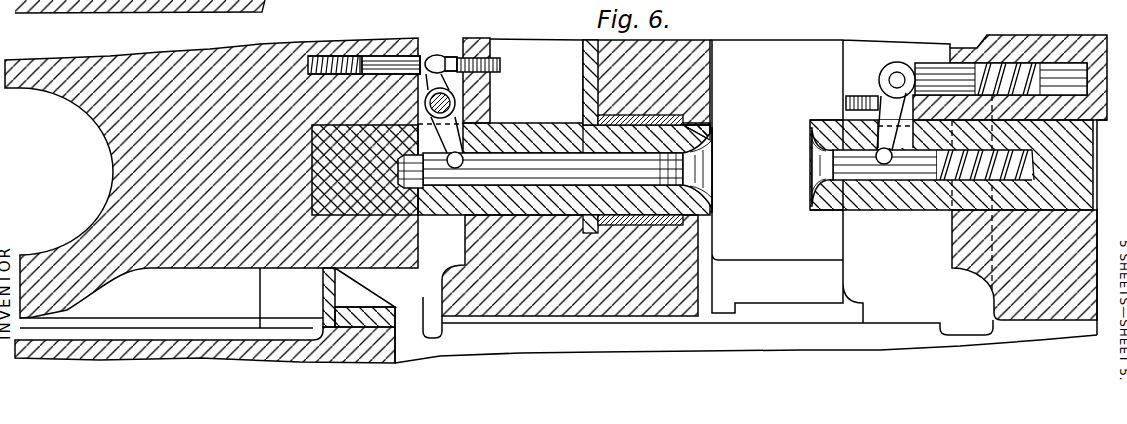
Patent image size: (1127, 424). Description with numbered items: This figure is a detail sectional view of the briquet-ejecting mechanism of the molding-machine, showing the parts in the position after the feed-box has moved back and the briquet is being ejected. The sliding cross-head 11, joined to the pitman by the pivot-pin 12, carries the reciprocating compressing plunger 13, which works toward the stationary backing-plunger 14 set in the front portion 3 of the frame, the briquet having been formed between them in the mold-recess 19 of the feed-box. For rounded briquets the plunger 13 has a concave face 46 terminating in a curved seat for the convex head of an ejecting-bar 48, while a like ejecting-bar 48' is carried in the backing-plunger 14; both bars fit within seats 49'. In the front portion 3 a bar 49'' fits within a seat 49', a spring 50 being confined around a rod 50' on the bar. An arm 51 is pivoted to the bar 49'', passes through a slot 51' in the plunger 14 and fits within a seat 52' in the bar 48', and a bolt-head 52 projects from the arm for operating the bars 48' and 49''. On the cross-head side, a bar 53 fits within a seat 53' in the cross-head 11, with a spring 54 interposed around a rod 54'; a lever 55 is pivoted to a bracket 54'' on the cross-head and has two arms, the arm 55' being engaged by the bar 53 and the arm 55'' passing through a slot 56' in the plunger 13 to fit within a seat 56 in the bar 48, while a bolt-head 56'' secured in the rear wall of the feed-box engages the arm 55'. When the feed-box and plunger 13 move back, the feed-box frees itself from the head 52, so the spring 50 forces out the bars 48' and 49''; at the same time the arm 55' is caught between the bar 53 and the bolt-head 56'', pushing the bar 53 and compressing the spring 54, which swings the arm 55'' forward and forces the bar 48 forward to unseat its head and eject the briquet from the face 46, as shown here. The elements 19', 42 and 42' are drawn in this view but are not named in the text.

The front portion 3 is at (1024, 265).
The cross-head 11 is at (211, 178).
The pivot-pin 12 is at (570, 265).
The compressing plunger 13 is at (365, 170).
The backing-plunger 14 is at (958, 185).
The mold-recess 19 is at (646, 90).
The lower bearing strip 19' is at (633, 230).
The conical end 42 is at (747, 169).
The conical seat 42' is at (763, 171).
The concave face 46 is at (712, 200).
The ejecting-bar 48 is at (553, 169).
The ejecting-bar 48' is at (885, 165).
The seat 49' is at (713, 156).
The bar 49'' is at (995, 81).
The spring 50 is at (1007, 69).
The rod 50' is at (1063, 71).
The arm 51 is at (897, 88).
The slot 51' is at (901, 121).
The bolt-head 52 is at (860, 90).
The seat 52' is at (868, 159).
The bar 53 is at (364, 61).
The seat 53' is at (391, 48).
The spring 54 is at (335, 49).
The rod 54' is at (347, 79).
The bracket 54'' is at (404, 83).
The lever 55 is at (444, 95).
The arm 55' is at (436, 48).
The arm 55'' is at (462, 142).
The seat 56 is at (467, 116).
The slot 56' is at (443, 103).
The bolt-head 56'' is at (454, 53).